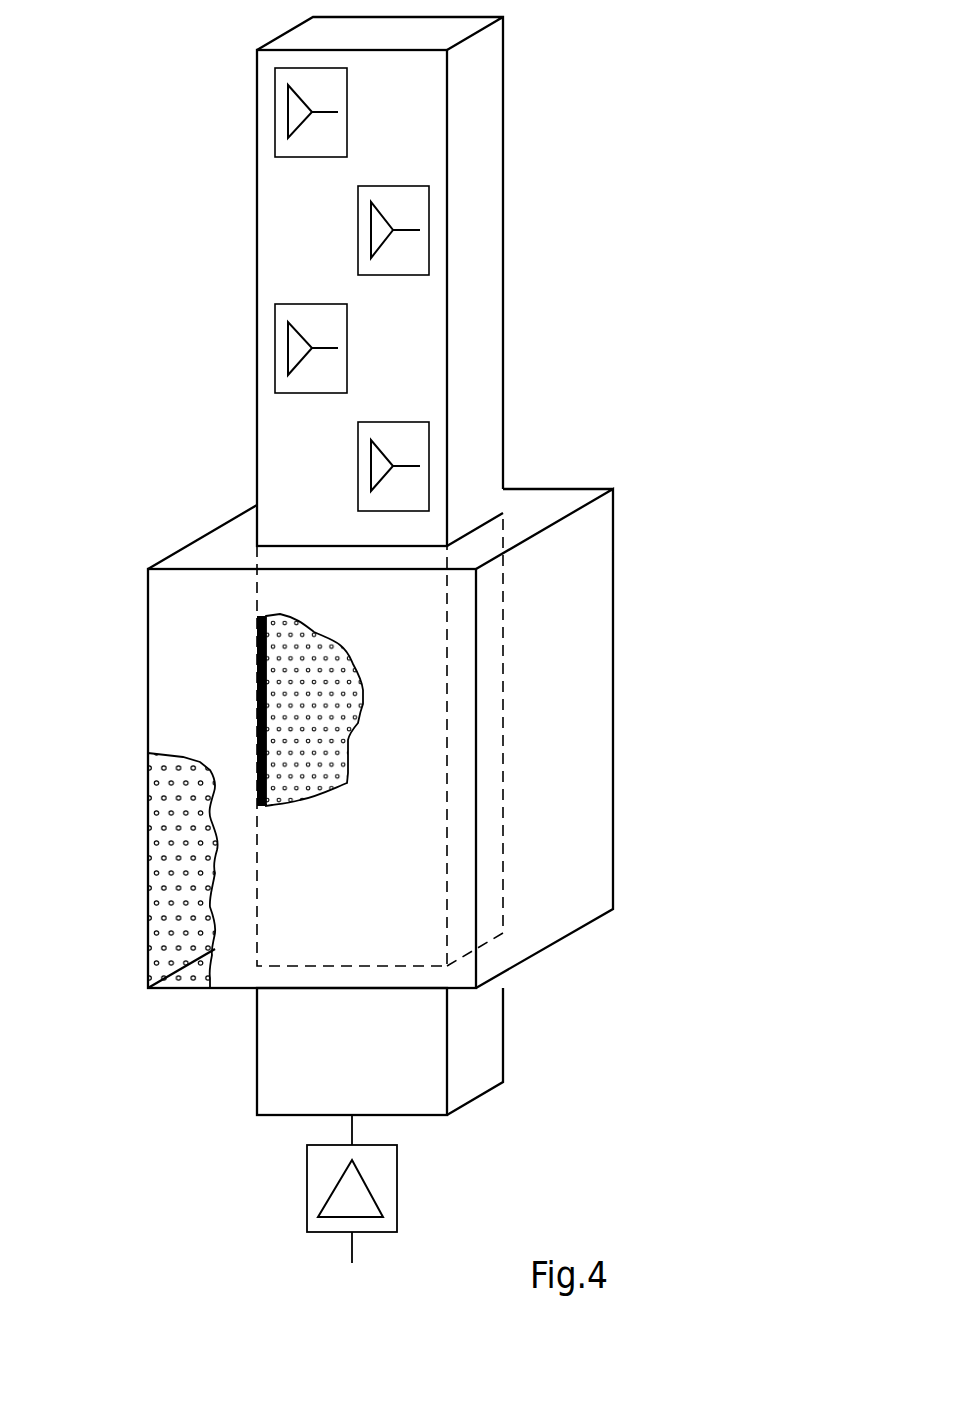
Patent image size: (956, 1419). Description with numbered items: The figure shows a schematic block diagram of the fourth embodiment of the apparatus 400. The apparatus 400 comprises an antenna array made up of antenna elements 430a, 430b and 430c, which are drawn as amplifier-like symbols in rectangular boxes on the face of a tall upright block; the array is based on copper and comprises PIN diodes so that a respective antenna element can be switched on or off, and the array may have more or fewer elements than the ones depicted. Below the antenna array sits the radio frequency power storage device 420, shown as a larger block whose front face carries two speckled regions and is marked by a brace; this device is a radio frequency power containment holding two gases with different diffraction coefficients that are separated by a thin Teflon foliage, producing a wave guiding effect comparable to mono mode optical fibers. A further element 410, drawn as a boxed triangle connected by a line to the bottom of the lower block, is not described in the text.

The apparatus 400 is at (630, 75).
The antenna / signal source 410 is at (307, 1192).
The radio frequency power storage device 420 is at (115, 568).
The antenna element 430a is at (275, 93).
The antenna element 430b is at (429, 208).
The antenna element 430c is at (275, 328).